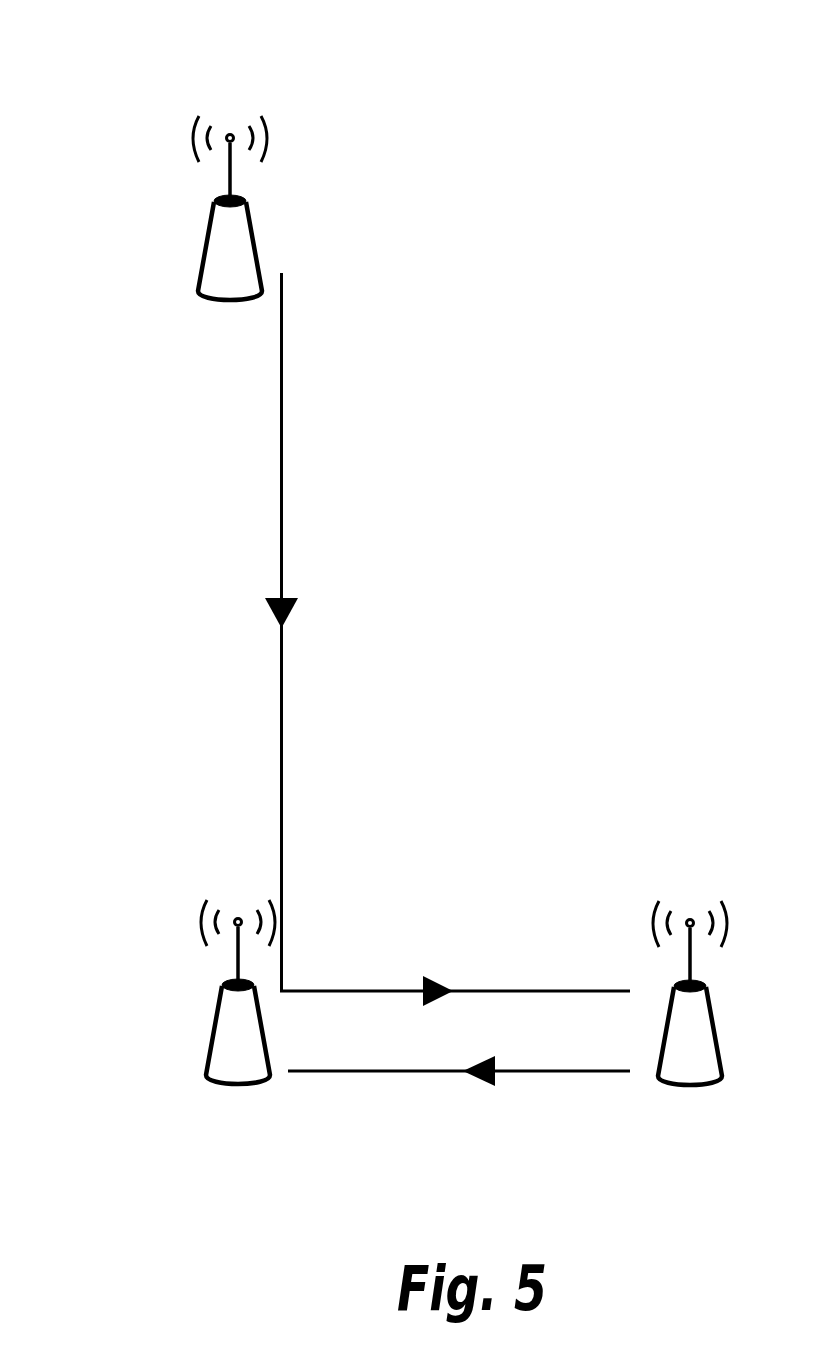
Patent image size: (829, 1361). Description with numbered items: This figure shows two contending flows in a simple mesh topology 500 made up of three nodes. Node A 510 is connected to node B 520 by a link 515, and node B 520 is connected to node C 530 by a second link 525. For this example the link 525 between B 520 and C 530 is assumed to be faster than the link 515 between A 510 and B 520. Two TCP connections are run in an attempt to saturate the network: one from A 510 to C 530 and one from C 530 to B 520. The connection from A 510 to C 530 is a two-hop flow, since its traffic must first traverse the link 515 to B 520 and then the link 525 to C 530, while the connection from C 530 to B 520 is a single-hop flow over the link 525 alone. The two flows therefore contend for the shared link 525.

The communication system 500 is at (663, 72).
The A 510 is at (267, 208).
The link between A and B 515 is at (243, 536).
The B 520 is at (197, 1035).
The link between B and C 525 is at (376, 1053).
The C 530 is at (727, 1022).